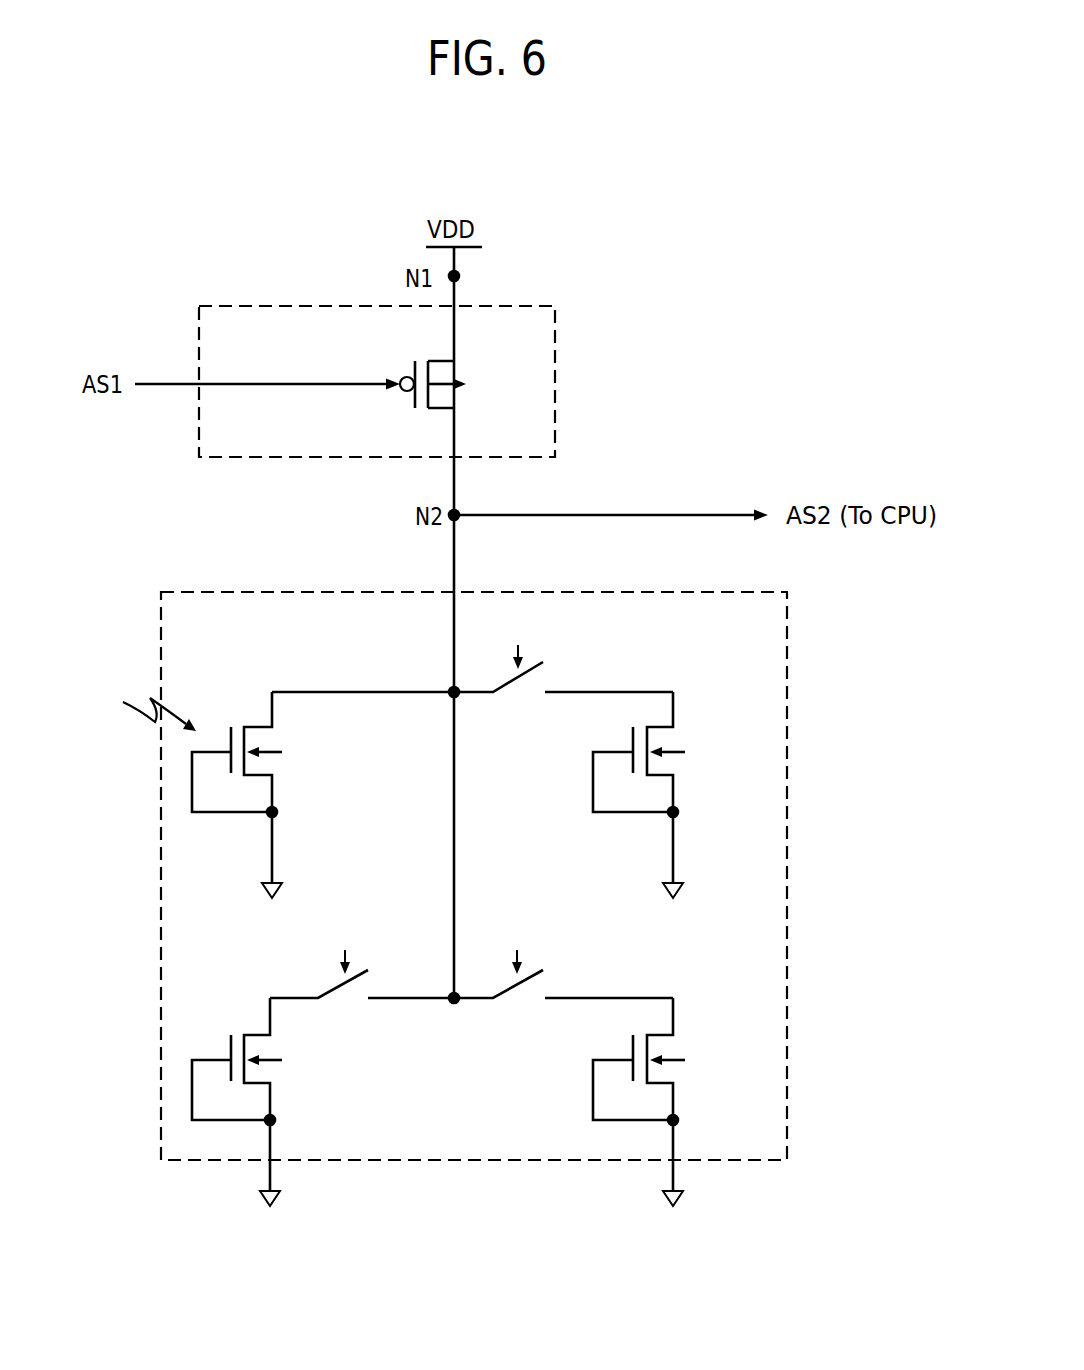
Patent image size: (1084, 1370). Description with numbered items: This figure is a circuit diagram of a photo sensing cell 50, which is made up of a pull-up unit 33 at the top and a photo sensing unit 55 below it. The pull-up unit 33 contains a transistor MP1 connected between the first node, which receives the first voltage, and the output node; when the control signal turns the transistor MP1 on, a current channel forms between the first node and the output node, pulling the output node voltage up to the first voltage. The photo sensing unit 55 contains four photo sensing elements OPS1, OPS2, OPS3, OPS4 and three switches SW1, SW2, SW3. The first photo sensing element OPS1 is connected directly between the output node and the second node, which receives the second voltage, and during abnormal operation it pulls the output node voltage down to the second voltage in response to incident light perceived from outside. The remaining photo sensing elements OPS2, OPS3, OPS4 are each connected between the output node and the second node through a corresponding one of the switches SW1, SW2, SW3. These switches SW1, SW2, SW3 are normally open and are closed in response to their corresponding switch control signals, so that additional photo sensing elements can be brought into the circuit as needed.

The photo sensing cell 50 is at (791, 206).
The pull-up unit 33 is at (555, 352).
The photo sensing unit 55 is at (787, 635).
The transistor MP1 is at (457, 395).
The switch SW1 is at (538, 677).
The switch SW2 is at (362, 987).
The switch SW3 is at (538, 985).
The first photo sensing element OPS1 is at (273, 763).
The photo sensing element OPS2 is at (677, 763).
The photo sensing element OPS3 is at (273, 1071).
The photo sensing element OPS4 is at (677, 1071).